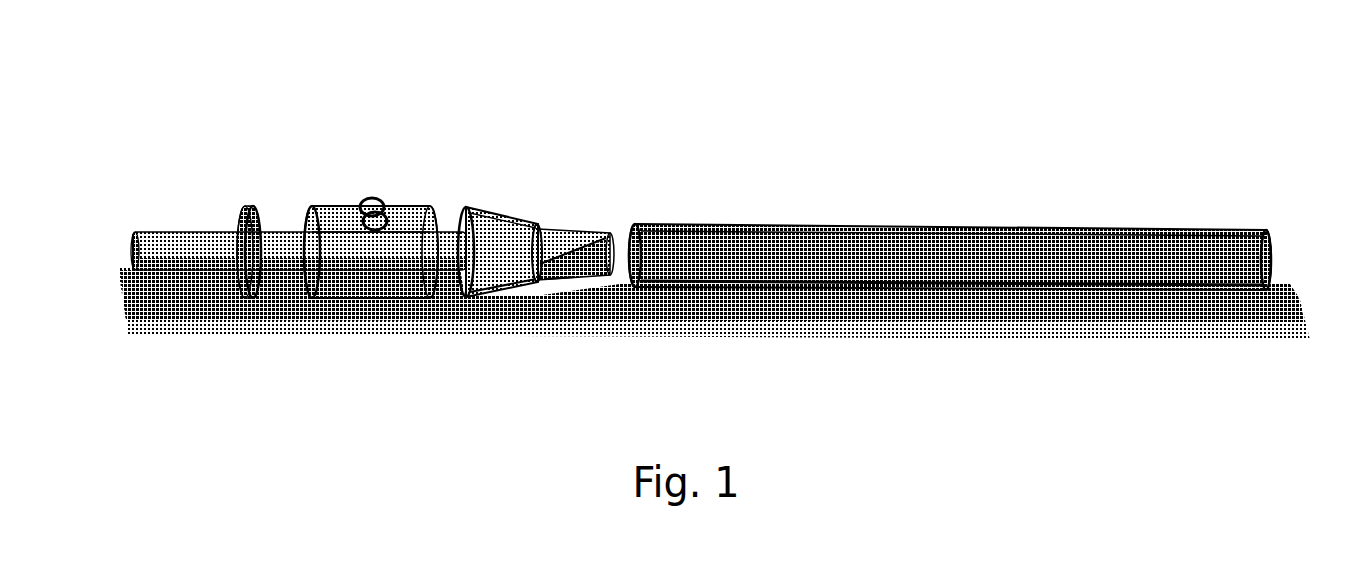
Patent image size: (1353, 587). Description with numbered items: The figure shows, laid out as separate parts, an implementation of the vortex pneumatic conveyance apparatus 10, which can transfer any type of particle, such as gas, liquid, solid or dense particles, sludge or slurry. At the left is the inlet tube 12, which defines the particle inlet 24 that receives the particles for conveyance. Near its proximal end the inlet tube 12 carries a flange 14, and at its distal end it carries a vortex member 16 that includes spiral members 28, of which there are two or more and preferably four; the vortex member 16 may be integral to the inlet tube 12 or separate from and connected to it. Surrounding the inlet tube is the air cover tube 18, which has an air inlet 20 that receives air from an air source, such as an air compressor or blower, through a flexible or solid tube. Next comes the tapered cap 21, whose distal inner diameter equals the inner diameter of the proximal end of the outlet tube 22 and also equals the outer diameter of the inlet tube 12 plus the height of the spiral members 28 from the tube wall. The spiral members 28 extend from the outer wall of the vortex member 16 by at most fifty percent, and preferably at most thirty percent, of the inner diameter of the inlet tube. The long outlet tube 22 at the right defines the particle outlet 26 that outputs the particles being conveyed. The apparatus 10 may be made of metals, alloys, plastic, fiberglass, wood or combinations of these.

The vortex pneumatic conveyance apparatus 10 is at (648, 36).
The inlet tube 12 is at (183, 215).
The flange 14 is at (250, 192).
The vortex member 16 is at (572, 224).
The air cover tube 18 is at (322, 198).
The air inlet 20 is at (372, 194).
The tapered cap 21 is at (497, 202).
The outlet tube 22 is at (972, 218).
The particle inlet 24 is at (122, 248).
The particle outlet 26 is at (1276, 262).
The spiral members 28 is at (557, 280).